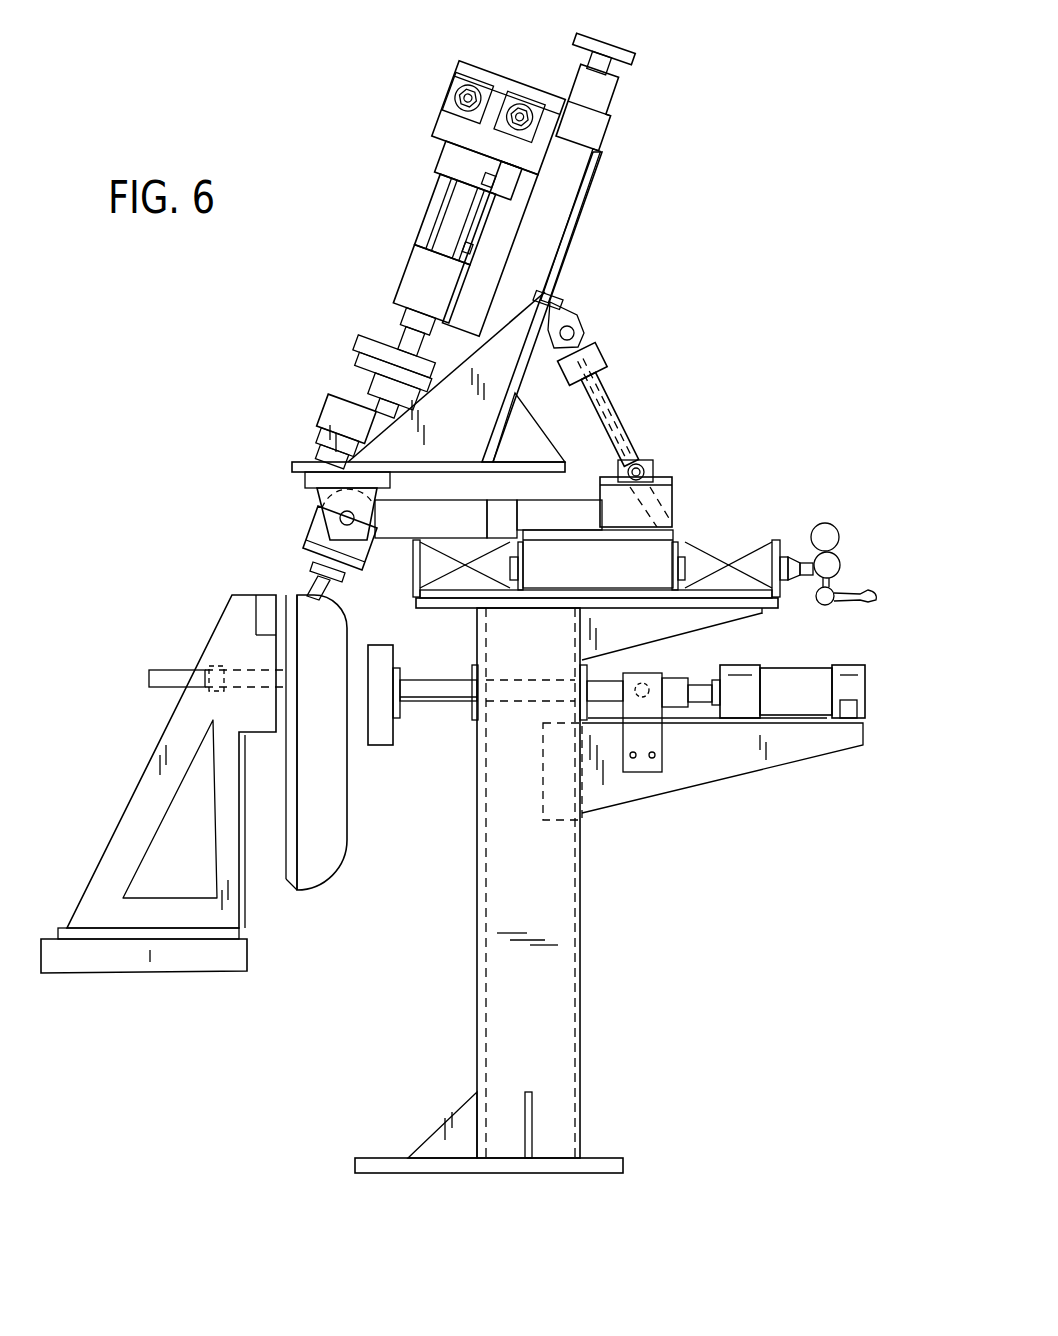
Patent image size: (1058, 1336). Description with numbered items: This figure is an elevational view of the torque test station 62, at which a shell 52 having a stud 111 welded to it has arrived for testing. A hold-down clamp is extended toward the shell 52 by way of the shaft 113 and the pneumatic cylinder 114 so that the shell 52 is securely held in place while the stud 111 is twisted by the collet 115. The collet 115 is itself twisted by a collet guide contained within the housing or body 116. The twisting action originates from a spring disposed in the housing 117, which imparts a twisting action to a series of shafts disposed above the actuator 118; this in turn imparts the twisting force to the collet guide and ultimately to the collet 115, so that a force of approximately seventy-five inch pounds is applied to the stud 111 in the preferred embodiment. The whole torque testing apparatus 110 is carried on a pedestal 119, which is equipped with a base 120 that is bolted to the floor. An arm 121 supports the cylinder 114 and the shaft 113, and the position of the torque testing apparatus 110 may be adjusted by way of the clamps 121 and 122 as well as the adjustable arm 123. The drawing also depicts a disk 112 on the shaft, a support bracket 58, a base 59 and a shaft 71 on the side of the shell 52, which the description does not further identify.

The torque test station 62 is at (713, 263).
The torque testing apparatus 110 is at (403, 266).
The stud 111 is at (307, 582).
The disk 112 is at (386, 746).
The shaft 113 is at (440, 681).
The pneumatic cylinder 114 is at (800, 667).
The collet 115 is at (300, 556).
The housing or body 116 is at (306, 522).
The housing 117 is at (438, 110).
The actuator 118 is at (330, 406).
The pedestal 119 is at (477, 986).
The base 120 is at (392, 1158).
The arm 121 is at (842, 556).
The clamp 122 is at (609, 38).
The adjustable arm 123 is at (615, 381).
The shell 52 is at (347, 840).
The support bracket 58 is at (149, 767).
The base 59 is at (146, 942).
The shaft 71 is at (175, 670).